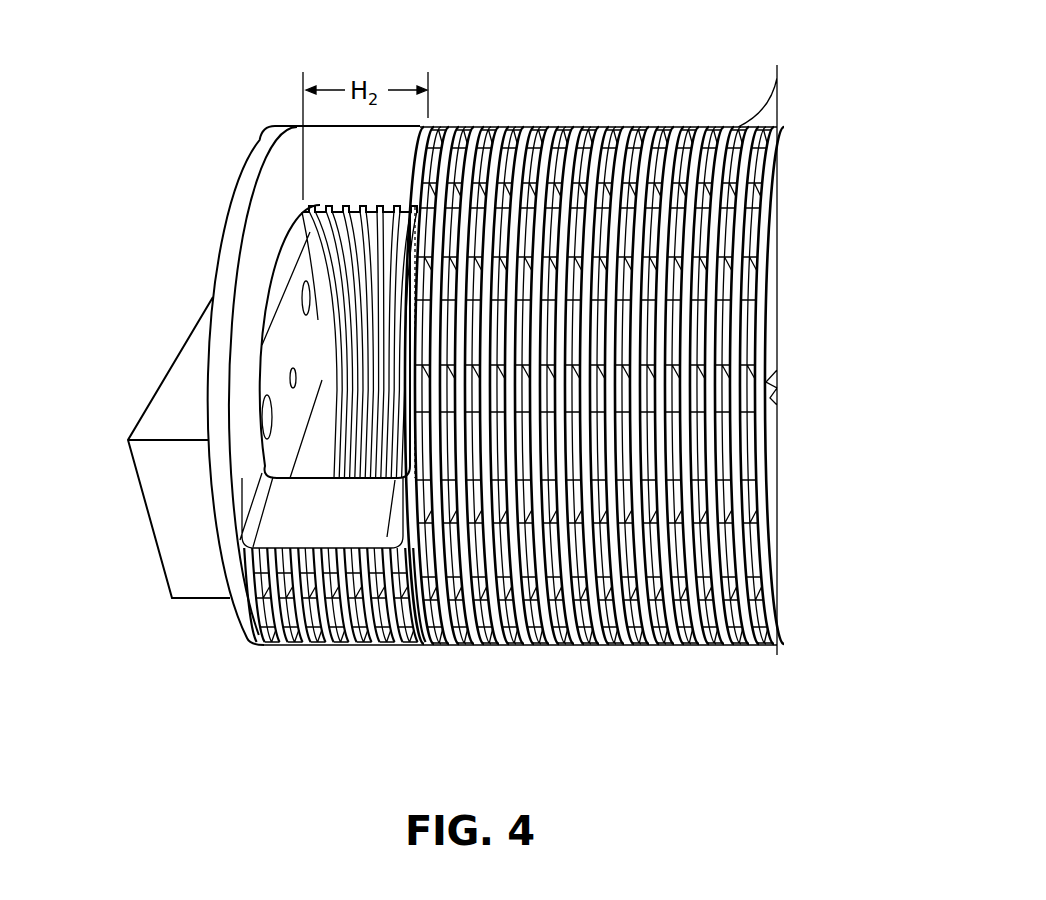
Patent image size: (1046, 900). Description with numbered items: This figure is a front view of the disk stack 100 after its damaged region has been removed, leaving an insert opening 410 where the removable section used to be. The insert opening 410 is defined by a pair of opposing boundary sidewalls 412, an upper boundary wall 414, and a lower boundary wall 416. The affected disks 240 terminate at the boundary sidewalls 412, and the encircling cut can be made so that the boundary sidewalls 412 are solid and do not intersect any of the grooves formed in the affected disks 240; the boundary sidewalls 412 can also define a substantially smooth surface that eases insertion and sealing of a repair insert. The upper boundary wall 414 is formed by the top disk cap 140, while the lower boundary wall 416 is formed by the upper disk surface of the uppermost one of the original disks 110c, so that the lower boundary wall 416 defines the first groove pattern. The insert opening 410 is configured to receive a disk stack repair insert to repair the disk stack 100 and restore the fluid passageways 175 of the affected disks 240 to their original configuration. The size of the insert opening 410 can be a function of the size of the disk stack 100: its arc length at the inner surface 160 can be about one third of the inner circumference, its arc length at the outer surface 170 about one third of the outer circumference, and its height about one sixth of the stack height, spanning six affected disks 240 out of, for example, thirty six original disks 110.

The disk stack 100 is at (838, 170).
The original disks 110 is at (656, 478).
The uppermost one of the original disks 110c is at (420, 645).
The top disk cap 140 is at (217, 413).
The inner surface 160 is at (368, 343).
The outer surface 170 is at (714, 322).
The fluid passageways 175 is at (415, 258).
The affected disks 240 is at (384, 652).
The insert opening 410 is at (333, 262).
The boundary sidewalls 412 is at (335, 162).
The upper boundary wall 414 is at (243, 310).
The lower boundary wall 416 is at (415, 182).